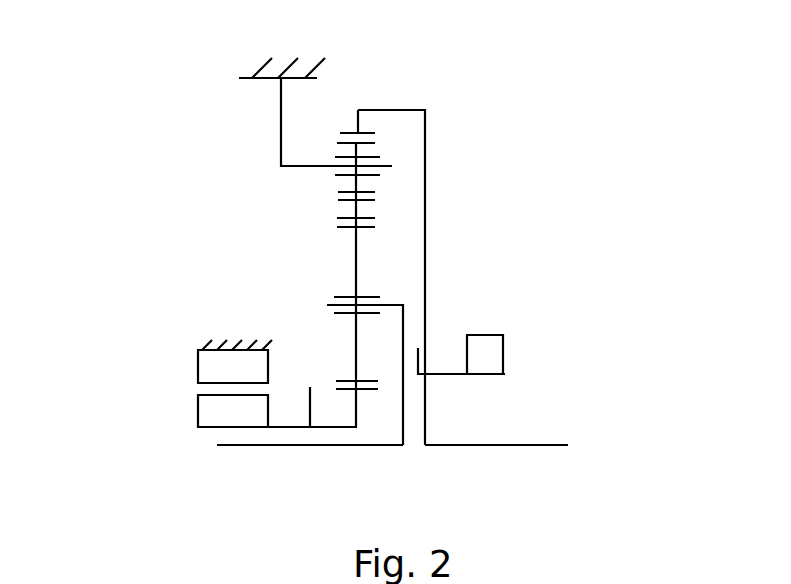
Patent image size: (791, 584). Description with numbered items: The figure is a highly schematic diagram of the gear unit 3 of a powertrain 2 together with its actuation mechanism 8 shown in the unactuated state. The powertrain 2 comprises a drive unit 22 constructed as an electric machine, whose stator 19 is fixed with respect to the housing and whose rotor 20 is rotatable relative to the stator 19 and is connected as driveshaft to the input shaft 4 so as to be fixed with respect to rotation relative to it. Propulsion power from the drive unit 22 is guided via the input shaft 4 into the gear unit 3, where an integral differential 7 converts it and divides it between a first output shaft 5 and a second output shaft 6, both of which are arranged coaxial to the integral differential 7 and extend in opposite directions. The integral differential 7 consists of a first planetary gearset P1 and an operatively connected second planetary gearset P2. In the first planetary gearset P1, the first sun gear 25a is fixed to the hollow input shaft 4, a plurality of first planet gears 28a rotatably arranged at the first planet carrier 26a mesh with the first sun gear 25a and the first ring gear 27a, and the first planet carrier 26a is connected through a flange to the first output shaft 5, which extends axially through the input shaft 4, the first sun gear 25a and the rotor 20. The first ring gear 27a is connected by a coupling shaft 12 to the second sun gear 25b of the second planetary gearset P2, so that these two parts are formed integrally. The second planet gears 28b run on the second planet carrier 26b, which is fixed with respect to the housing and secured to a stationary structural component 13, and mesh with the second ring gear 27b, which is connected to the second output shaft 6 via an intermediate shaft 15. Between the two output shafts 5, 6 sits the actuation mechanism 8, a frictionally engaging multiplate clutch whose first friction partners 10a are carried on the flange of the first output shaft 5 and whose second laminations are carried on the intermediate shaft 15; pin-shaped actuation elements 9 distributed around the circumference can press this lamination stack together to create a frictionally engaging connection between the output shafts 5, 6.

The powertrain 2 is at (610, 78).
The gear unit 3 is at (482, 82).
The input shaft 4 is at (277, 388).
The first output shaft 5 is at (235, 445).
The second output shaft 6 is at (550, 445).
The integral differential 7 is at (445, 93).
The actuation mechanism 8 is at (513, 332).
The actuation elements 9 is at (435, 372).
The first friction partners 10a is at (413, 332).
The coupling shaft 12 is at (352, 213).
The stationary structural component 13 is at (256, 72).
The intermediate shaft 15 is at (427, 232).
The stator 19 is at (213, 365).
The rotor 20 is at (198, 410).
The drive unit 22 is at (187, 335).
The first sun gear 25a is at (370, 393).
The second sun gear 25b is at (355, 202).
The first planet carrier 26a is at (327, 300).
The second planet carrier 26b is at (281, 155).
The first ring gear 27a is at (337, 218).
The second ring gear 27b is at (345, 132).
The first planet gears 28a is at (355, 350).
The second planet gears 28b is at (355, 182).
The first planetary gearset P1 is at (382, 420).
The second planetary gearset P2 is at (340, 107).